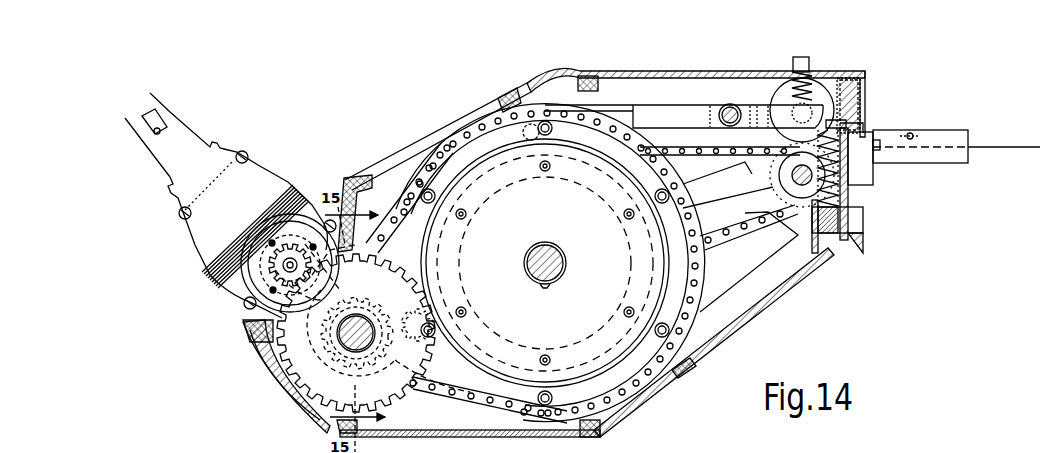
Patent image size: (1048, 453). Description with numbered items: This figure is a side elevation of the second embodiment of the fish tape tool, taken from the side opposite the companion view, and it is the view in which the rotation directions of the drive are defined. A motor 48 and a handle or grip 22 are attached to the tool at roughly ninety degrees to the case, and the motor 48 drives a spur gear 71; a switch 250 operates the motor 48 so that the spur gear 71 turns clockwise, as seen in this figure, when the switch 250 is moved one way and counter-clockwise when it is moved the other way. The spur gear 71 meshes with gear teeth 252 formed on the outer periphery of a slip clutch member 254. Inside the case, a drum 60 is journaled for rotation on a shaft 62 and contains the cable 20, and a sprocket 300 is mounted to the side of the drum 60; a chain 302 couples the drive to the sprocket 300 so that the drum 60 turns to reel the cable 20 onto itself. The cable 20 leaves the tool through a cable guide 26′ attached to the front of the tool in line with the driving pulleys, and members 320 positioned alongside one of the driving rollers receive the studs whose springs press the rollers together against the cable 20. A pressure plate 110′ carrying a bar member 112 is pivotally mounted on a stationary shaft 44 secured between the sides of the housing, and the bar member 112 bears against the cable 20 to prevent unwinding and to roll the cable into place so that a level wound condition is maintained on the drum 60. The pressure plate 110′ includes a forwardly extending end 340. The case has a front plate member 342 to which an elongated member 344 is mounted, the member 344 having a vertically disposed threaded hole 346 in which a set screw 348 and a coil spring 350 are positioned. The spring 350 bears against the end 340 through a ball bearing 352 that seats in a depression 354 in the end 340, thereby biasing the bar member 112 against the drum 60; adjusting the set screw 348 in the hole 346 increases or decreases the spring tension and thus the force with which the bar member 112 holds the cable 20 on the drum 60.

The cable 20 is at (1004, 135).
The handle or grip 22 is at (197, 134).
The cable guide 26′ is at (957, 135).
The stationary shaft 44 is at (728, 108).
The motor 48 is at (287, 173).
The drum 60 is at (660, 293).
The shaft 62 is at (562, 265).
The spur gear 71 is at (272, 274).
The pressure plate 110′ is at (632, 102).
The bar member 112 is at (524, 134).
The switch 250 is at (165, 112).
The gear teeth 252 is at (268, 352).
The slip clutch member 254 is at (307, 370).
The sprocket 300 is at (384, 328).
The chain 302 is at (440, 148).
The members 320 is at (776, 190).
The forwardly extending portion 340 is at (836, 88).
The front plate member 342 is at (866, 78).
The elongated member 344 is at (857, 232).
The threaded hole 346 is at (829, 259).
The set screw 348 is at (833, 244).
The coil spring 350 is at (868, 190).
The ball bearing 352 is at (848, 130).
The depression 354 is at (836, 120).